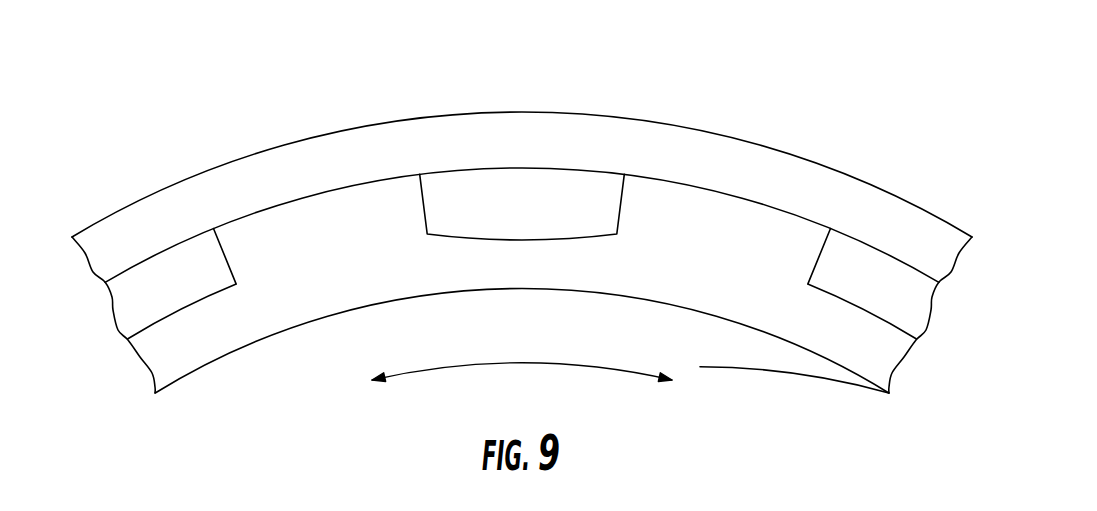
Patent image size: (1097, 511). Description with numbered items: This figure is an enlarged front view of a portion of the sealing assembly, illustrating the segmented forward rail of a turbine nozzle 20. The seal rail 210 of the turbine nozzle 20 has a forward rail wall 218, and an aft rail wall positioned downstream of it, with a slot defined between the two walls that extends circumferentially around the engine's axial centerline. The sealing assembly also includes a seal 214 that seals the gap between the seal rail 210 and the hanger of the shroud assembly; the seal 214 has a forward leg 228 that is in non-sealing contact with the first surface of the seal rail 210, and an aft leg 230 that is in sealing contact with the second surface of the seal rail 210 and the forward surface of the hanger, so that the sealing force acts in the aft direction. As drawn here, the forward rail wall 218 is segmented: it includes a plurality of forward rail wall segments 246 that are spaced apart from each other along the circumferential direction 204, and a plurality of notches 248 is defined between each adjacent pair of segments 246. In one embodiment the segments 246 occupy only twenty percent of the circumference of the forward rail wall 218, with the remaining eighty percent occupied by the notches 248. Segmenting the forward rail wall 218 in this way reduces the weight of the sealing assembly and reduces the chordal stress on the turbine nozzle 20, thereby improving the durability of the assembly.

The turbine nozzle 20 is at (842, 370).
The circumferential direction 204 is at (493, 363).
The seal rail 210 is at (96, 336).
The seal 214 is at (170, 103).
The forward rail wall 218 is at (798, 235).
The forward leg 228 is at (152, 257).
The aft leg 230 is at (378, 122).
The forward rail wall segments 246 is at (325, 232).
The notches 248 is at (178, 304).